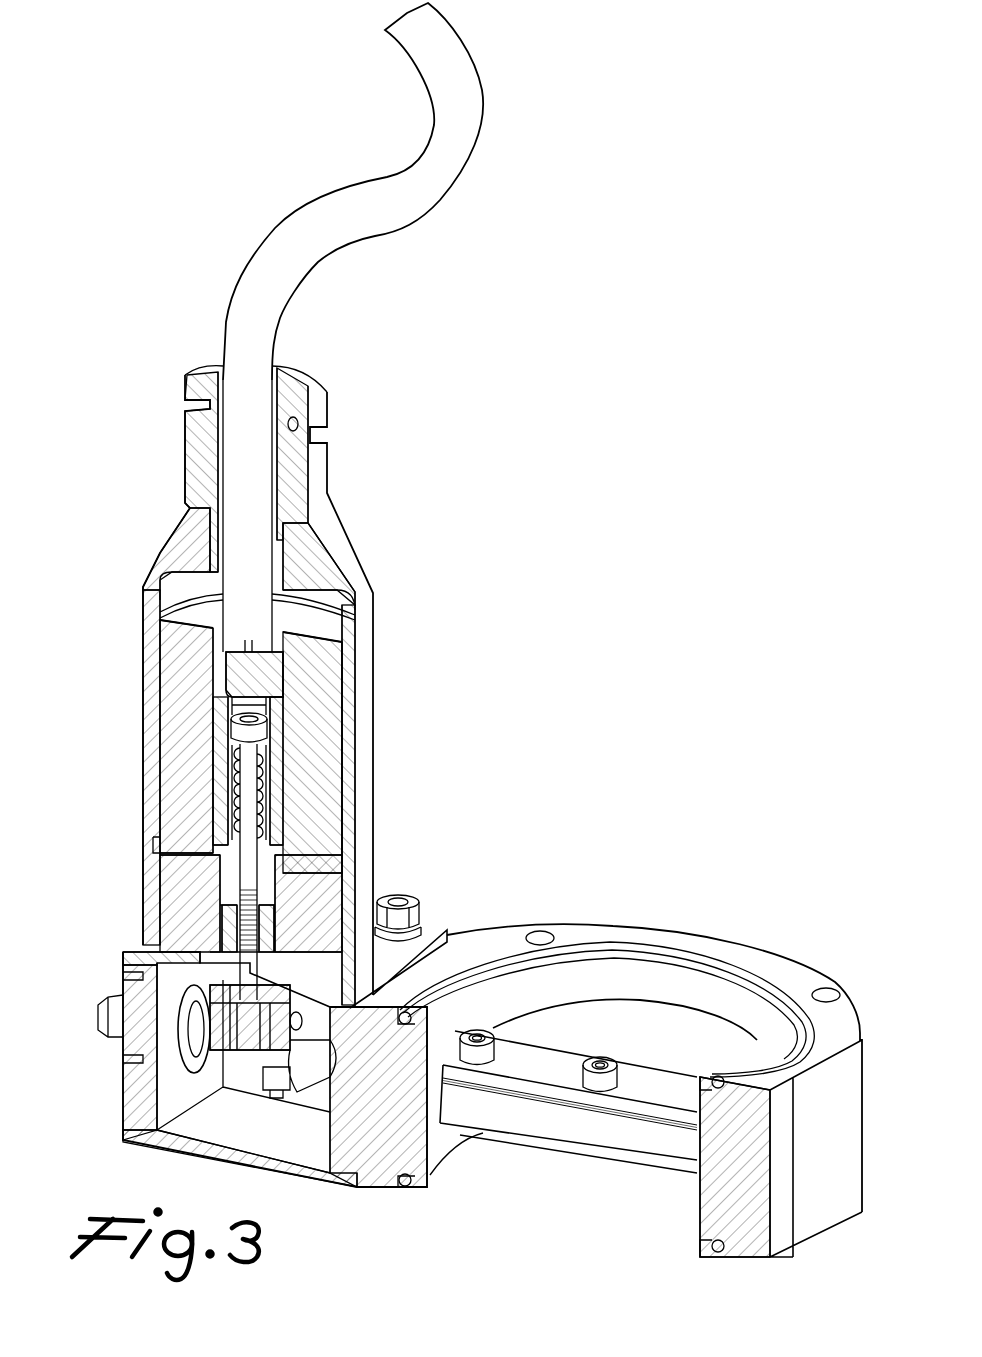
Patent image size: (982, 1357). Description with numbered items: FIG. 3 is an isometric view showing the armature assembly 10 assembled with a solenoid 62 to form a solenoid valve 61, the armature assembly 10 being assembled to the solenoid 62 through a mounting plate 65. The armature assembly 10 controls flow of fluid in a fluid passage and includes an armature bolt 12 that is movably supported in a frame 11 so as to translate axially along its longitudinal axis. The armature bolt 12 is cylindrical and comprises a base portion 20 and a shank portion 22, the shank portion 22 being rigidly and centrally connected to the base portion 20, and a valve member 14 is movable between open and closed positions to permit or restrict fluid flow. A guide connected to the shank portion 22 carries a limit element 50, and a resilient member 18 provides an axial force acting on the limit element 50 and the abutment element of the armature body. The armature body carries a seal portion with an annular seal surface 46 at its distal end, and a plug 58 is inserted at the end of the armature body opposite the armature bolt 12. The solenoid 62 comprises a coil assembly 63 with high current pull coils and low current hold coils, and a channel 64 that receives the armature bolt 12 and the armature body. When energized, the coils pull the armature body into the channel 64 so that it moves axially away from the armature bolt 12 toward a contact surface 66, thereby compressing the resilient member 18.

The armature assembly 10 is at (472, 917).
The frame 11 is at (770, 958).
The armature bolt 12 is at (308, 1047).
The valve member 14 is at (630, 1127).
The resilient member 18 is at (268, 790).
The base portion 20 is at (227, 1033).
The shank portion 22 is at (230, 958).
The seal surface 46 is at (300, 657).
The limit element 50 is at (264, 722).
The plug 58 is at (250, 682).
The solenoid valve 61 is at (600, 726).
The solenoid 62 is at (160, 547).
The coil assembly 63 is at (312, 765).
The channel 64 is at (283, 840).
The mounting plate 65 is at (433, 933).
The contact surface 66 is at (232, 655).